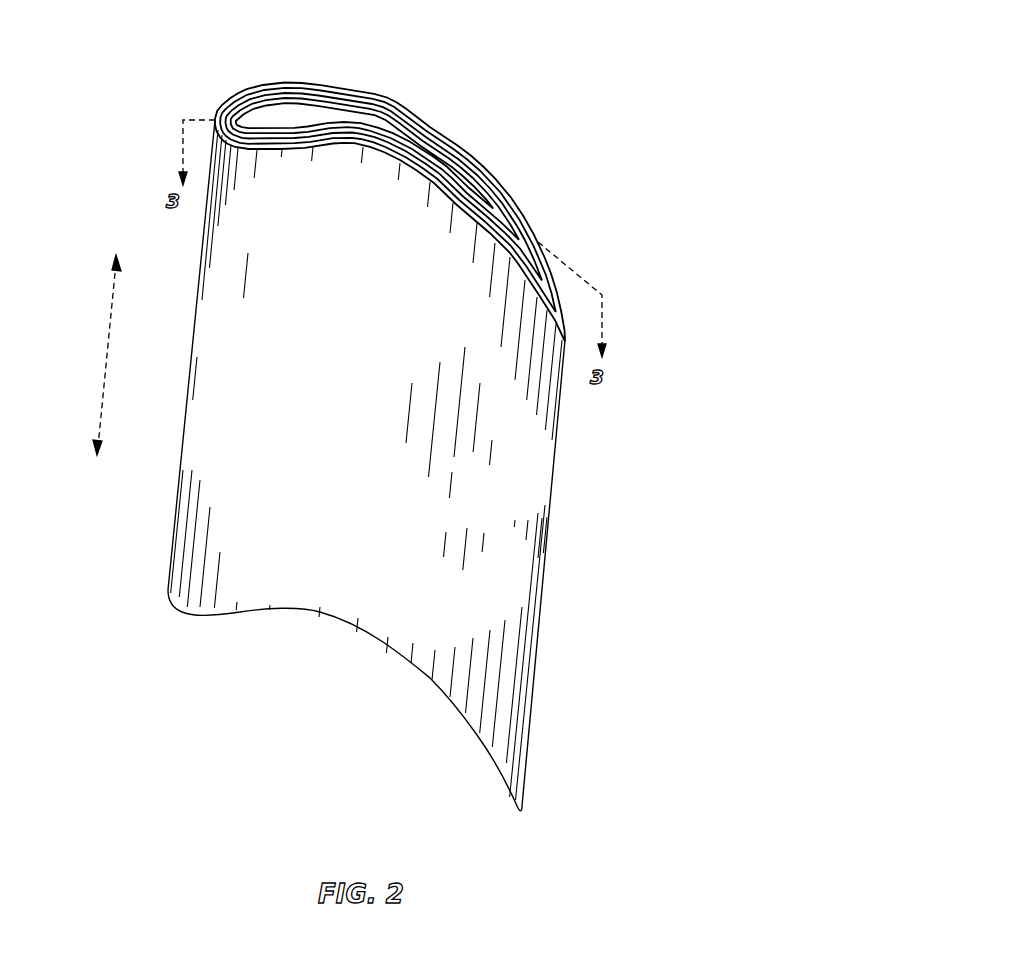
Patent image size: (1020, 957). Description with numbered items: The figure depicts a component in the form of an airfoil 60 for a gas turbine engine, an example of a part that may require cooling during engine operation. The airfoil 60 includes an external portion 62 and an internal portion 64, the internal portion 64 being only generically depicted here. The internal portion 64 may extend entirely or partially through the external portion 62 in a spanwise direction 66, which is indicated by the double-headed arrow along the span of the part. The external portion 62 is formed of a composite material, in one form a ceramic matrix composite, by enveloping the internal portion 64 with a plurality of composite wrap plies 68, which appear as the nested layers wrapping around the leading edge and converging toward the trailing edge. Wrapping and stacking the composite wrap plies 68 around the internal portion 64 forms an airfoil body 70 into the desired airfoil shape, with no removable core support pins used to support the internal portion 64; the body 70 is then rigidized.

The airfoil 60 is at (417, 411).
The external portion 62 is at (521, 210).
The internal portion 64 is at (305, 115).
The spanwise direction 66 is at (108, 355).
The composite wrap plies 68 is at (425, 128).
The airfoil body 70 is at (340, 400).